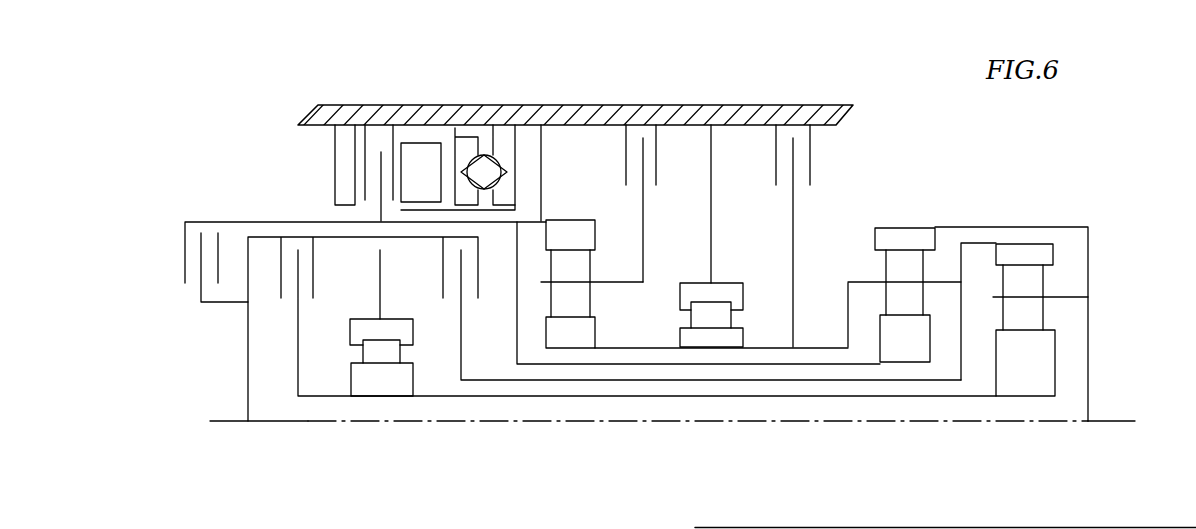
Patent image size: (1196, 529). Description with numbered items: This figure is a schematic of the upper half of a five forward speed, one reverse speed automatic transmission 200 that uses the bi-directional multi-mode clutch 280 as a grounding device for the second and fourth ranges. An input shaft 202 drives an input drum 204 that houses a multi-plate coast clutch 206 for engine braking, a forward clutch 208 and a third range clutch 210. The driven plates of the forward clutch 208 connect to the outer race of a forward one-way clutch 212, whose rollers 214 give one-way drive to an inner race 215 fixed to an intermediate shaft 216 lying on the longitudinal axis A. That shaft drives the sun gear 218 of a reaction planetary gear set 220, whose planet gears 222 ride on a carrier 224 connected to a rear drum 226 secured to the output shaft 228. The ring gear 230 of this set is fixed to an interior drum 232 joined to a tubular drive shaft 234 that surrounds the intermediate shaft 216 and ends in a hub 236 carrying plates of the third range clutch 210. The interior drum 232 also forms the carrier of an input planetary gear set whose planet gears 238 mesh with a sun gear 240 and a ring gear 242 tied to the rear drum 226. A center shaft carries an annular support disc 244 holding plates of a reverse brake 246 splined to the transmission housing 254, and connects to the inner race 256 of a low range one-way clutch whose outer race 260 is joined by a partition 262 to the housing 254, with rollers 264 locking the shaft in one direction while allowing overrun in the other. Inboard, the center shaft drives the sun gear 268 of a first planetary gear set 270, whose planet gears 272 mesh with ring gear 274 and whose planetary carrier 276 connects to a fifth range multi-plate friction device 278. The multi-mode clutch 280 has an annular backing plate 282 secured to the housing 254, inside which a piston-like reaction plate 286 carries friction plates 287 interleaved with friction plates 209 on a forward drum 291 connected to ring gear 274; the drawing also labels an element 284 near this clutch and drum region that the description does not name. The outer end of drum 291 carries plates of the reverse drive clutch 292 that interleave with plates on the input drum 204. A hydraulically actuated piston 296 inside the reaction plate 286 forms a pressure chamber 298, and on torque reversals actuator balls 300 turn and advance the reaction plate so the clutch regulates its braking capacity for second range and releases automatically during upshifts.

The automatic transmission 200 is at (574, 79).
The input shaft 202 is at (228, 422).
The input drum 204 is at (270, 221).
The coast clutch 206 is at (297, 219).
The forward clutch 208 is at (355, 290).
The friction plates 209 is at (363, 155).
The third range clutch 210 is at (445, 310).
The forward one-way clutch 212 is at (382, 402).
The rollers 214 is at (388, 352).
The inner race 215 is at (365, 387).
The intermediate shaft 216 is at (350, 338).
The sun gear 218 is at (1028, 353).
The reaction planetary gear set 220 is at (1058, 248).
The planet gears 222 is at (1027, 315).
The carrier 224 is at (1062, 297).
The rear drum 226 is at (1050, 227).
The output shaft 228 is at (1118, 422).
The ring gear 230 is at (1015, 252).
The interior drum 232 is at (975, 243).
The tubular drive shaft 234 is at (940, 281).
The hub 236 is at (462, 365).
The planet gears 238 is at (693, 338).
The sun gear 240 is at (898, 348).
The ring gear 242 is at (888, 238).
The annular support disc 244 is at (790, 255).
The reverse brake 246 is at (778, 100).
The transmission housing 254 is at (697, 108).
The inner race 256 is at (722, 338).
The outer race 260 is at (717, 292).
The partition 262 is at (708, 220).
The rollers 264 is at (728, 312).
The sun gear 268 is at (555, 337).
The first planetary gear set 270 is at (575, 355).
The planet gears 272 is at (577, 268).
The ring gear 274 is at (550, 222).
The planetary carrier 276 is at (604, 283).
The fifth range multi-plate friction device 278 is at (645, 144).
The multi-mode clutch 280 is at (362, 97).
The backing plate 282 is at (498, 195).
The bracket 284 is at (342, 145).
The reaction plate 286 is at (463, 143).
The friction plates 287 is at (376, 150).
The forward drum 291 is at (240, 221).
The reverse drive clutch 292 is at (198, 318).
The piston 296 is at (420, 158).
The pressure chamber 298 is at (463, 158).
The actuator balls 300 is at (483, 165).
The longitudinal axis A is at (780, 422).